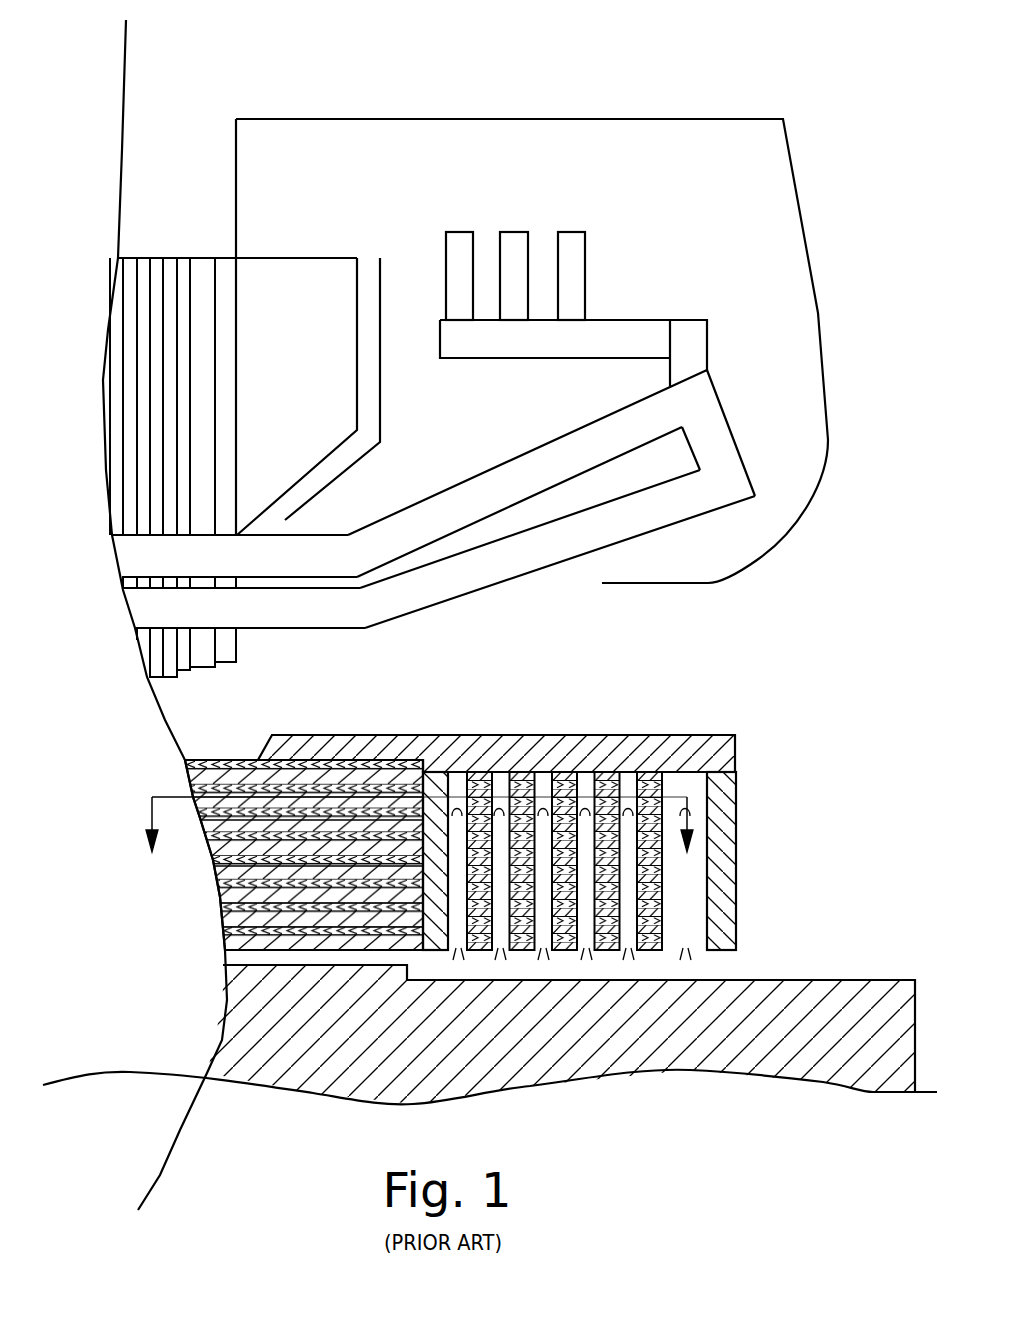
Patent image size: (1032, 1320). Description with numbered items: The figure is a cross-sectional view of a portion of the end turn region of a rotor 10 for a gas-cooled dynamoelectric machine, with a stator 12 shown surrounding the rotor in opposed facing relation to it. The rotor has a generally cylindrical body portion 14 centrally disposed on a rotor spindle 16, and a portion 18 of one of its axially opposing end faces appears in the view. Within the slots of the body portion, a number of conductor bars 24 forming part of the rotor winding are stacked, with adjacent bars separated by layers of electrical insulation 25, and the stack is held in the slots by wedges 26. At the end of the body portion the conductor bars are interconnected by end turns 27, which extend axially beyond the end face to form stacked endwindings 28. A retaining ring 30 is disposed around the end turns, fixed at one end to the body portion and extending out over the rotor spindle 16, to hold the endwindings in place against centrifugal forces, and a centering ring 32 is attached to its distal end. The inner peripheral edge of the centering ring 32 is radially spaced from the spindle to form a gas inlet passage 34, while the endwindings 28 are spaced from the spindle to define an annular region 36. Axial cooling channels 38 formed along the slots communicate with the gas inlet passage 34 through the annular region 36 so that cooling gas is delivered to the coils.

The rotor 10 is at (490, 883).
The stator 12 is at (853, 312).
The body portion 14 is at (227, 1022).
The rotor spindle 16 is at (708, 1057).
The end face portion 18 is at (393, 957).
The conductor bars 24 is at (224, 918).
The layers of electrical insulation 25 is at (213, 860).
The wedges 26 is at (187, 764).
The end turns 27 is at (480, 950).
The stacked endwindings 28 is at (606, 959).
The retaining ring 30 is at (508, 742).
The centering ring 32 is at (723, 842).
The gas inlet passage 34 is at (721, 977).
The annular region 36 is at (596, 980).
The axial cooling channels 38 is at (322, 962).